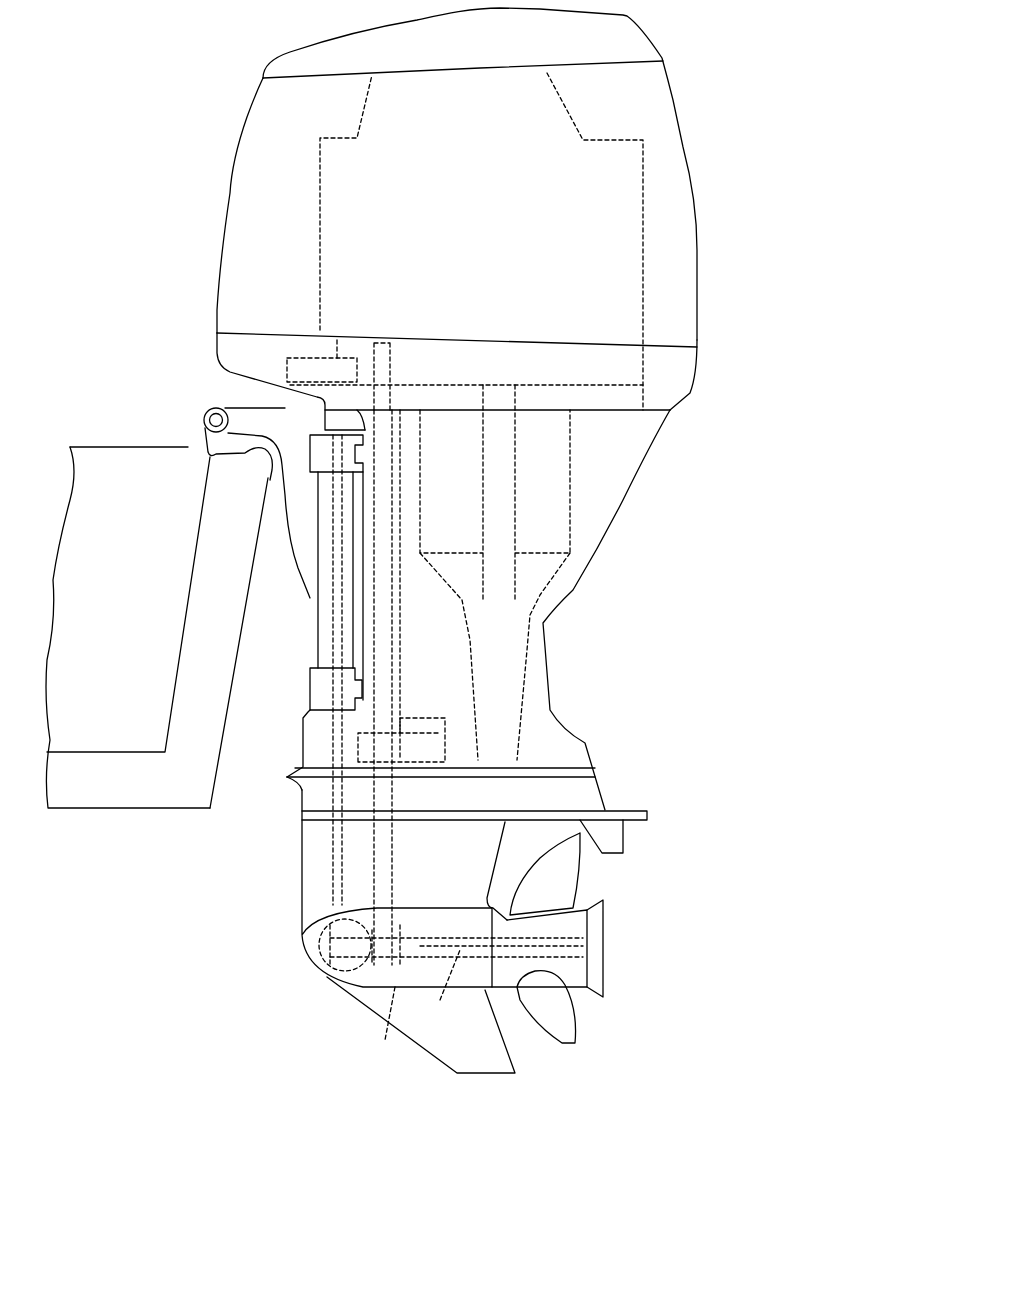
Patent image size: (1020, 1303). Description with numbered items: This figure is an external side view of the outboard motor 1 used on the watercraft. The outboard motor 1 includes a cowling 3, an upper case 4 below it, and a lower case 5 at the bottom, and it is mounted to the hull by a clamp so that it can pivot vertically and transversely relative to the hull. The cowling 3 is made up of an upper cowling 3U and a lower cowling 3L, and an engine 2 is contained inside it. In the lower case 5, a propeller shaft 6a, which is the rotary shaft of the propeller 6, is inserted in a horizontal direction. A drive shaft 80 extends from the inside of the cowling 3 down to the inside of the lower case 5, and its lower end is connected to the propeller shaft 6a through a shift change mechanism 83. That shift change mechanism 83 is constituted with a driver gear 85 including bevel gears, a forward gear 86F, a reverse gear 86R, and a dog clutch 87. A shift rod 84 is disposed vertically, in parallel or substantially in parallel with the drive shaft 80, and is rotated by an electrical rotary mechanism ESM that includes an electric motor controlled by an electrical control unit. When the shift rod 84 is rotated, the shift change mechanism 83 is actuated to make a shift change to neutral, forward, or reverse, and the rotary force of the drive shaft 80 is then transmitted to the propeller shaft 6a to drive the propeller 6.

The outboard motor 1 is at (215, 151).
The engine 2 is at (645, 205).
The cowling 3 is at (855, 83).
The upper cowling 3U is at (648, 105).
The lower cowling 3L is at (685, 378).
The upper case 4 is at (623, 502).
The lower case 5 is at (300, 858).
The propeller 6 is at (567, 1018).
The propeller shaft 6a is at (452, 960).
The drive shaft 80 is at (392, 652).
The shift change mechanism 83 is at (190, 920).
The shift rod 84 is at (337, 745).
The driver gear 85 is at (345, 905).
The forward gear 86F is at (345, 965).
The reverse gear 86R is at (400, 1000).
The dog clutch 87 is at (395, 985).
The electrical rotary mechanism ESM is at (286, 370).